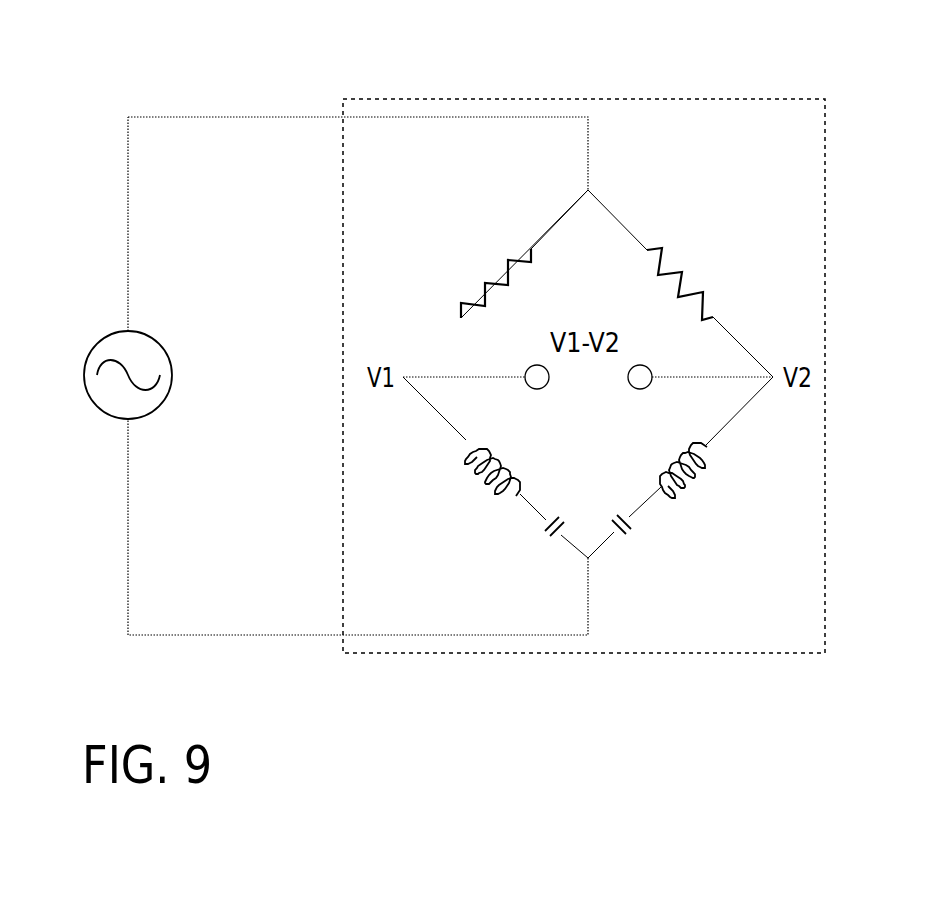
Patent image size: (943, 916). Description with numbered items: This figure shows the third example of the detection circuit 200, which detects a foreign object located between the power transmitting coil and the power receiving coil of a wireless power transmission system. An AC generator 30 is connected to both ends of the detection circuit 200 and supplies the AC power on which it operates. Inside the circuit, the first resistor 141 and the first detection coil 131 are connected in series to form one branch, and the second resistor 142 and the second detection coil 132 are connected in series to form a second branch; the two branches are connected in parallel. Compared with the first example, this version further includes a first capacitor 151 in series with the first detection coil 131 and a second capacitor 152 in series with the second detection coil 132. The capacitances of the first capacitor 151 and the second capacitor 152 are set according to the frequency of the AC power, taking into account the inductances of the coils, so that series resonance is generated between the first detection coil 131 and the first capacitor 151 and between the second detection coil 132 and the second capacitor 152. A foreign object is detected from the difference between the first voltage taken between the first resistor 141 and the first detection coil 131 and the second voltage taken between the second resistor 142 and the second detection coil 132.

The detection circuit 200 is at (647, 99).
The AC generator 30 is at (102, 330).
The first resistor 141 is at (482, 265).
The second resistor 142 is at (698, 272).
The first detection coil 131 is at (512, 452).
The second detection coil 132 is at (667, 453).
The first capacitor 151 is at (540, 540).
The second capacitor 152 is at (637, 540).